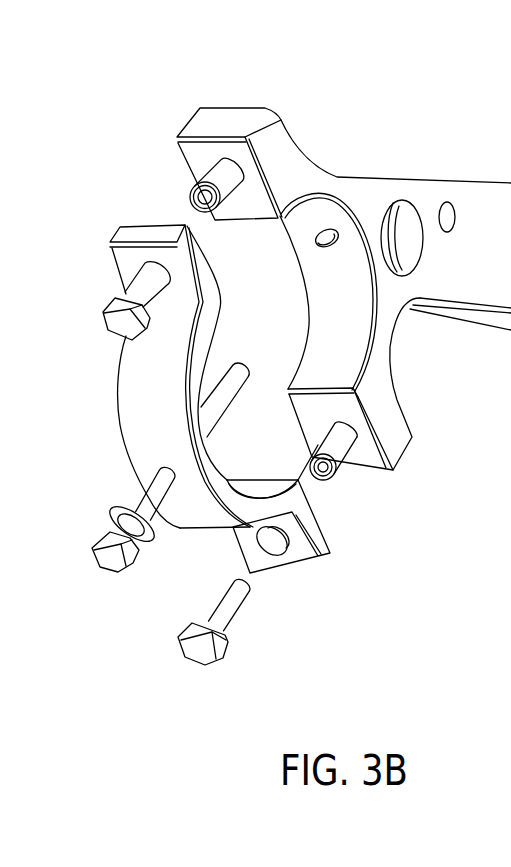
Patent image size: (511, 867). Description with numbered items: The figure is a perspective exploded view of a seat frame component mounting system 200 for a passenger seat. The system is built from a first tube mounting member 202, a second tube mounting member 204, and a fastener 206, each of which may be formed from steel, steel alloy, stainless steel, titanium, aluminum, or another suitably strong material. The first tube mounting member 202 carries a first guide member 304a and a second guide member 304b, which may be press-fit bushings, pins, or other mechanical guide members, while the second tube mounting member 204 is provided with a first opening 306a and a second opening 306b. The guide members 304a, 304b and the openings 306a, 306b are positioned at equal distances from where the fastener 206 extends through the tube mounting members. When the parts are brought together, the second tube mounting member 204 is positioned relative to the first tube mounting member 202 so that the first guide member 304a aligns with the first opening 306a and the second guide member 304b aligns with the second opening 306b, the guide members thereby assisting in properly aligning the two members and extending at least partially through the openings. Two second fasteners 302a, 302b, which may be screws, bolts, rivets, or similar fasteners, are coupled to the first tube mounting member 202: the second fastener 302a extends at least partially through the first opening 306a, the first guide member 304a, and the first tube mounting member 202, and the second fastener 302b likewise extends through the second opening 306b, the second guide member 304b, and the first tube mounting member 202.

The seat frame component mounting system 200 is at (332, 106).
The first tube mounting member 202 is at (383, 383).
The second tube mounting member 204 is at (180, 528).
The fastener 206 is at (100, 568).
The second fastener 302a is at (104, 316).
The second fastener 302b is at (207, 660).
The first guide member 304a is at (190, 193).
The second guide member 304b is at (345, 453).
The first opening 306a is at (125, 262).
The second opening 306b is at (276, 551).